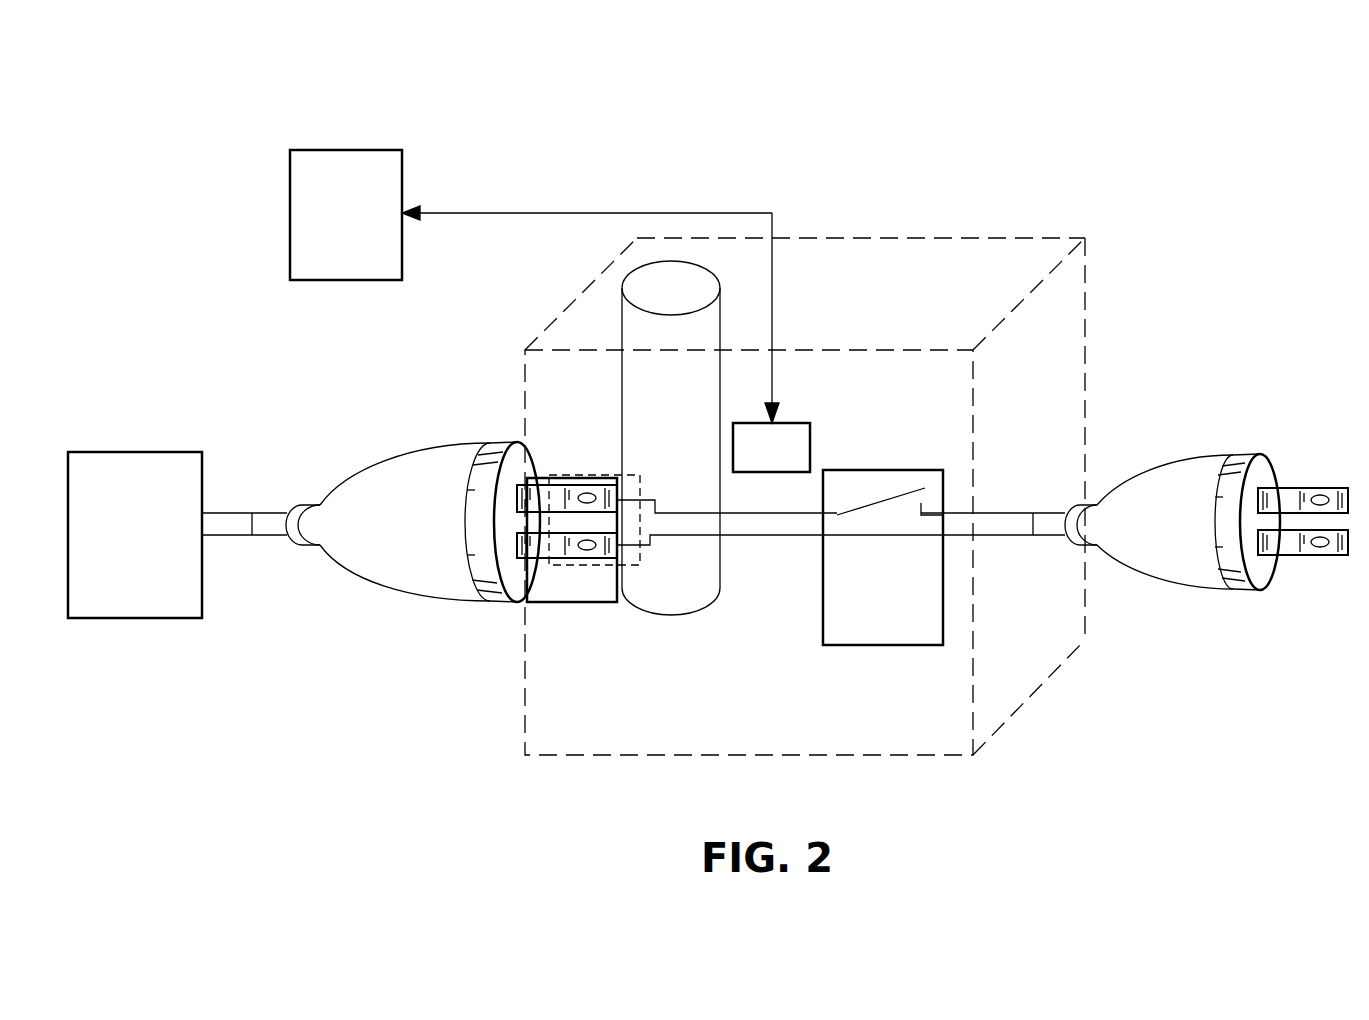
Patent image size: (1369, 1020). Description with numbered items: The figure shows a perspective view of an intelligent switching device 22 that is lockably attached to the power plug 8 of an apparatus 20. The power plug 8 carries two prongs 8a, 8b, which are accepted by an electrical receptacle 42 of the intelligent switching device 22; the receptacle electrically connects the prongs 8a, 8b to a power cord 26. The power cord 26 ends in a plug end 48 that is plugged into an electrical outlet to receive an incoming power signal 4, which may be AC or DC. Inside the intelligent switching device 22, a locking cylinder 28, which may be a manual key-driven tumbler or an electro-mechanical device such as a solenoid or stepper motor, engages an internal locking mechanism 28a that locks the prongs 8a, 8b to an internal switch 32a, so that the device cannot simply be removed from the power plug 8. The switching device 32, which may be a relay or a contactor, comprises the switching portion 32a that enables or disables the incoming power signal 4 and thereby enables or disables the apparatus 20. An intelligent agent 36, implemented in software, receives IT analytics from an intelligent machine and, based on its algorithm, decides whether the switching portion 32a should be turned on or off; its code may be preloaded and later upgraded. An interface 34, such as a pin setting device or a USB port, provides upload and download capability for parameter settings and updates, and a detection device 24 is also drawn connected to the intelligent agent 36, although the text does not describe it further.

The incoming power signal 4 is at (1230, 438).
The power plug 8 is at (425, 465).
The prong 8a is at (615, 495).
The prong 8b is at (612, 548).
The apparatus 20 is at (177, 535).
The intelligent switching device 22 is at (478, 170).
The detection device 24 is at (531, 215).
The power cord 26 is at (748, 538).
The locking cylinder 28 is at (700, 265).
The internal locking mechanism 28a is at (690, 602).
The switching device 32 is at (883, 557).
The switching portion 32a is at (866, 488).
The interface 34 is at (565, 600).
The intelligent agent 36 is at (790, 422).
The electrical receptacle 42 is at (596, 475).
The plug end 48 is at (1165, 465).